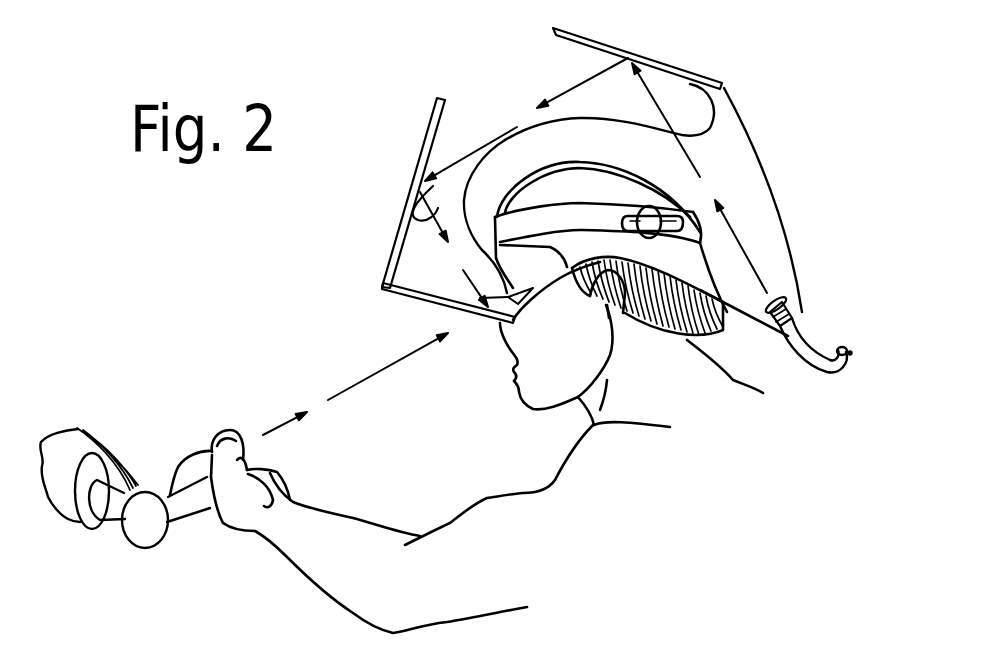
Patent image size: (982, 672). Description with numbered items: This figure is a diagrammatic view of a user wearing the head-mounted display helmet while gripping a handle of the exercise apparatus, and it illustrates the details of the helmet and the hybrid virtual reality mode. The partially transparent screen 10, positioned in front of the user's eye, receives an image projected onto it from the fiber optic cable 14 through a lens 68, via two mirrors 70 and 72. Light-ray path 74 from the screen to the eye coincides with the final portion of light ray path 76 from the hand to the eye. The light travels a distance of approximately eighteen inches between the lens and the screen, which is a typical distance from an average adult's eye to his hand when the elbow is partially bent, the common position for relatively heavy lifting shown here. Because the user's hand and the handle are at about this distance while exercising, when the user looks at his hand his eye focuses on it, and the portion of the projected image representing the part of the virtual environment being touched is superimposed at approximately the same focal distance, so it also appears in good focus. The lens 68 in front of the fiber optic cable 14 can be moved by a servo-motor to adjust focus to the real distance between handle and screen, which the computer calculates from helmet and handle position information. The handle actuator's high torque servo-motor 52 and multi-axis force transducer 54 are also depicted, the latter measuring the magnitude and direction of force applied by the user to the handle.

The partially transparent screen 10 is at (407, 303).
The fiber optic cable 14 is at (805, 338).
The high torque servo-motor with encoder and gear head 52 is at (72, 522).
The multi-axis force transducer 54 is at (157, 535).
The lens 68 is at (787, 298).
The mirror 70 is at (663, 60).
The mirror 72 is at (425, 136).
The light-ray path 74 is at (466, 215).
The light ray path 76 is at (473, 325).